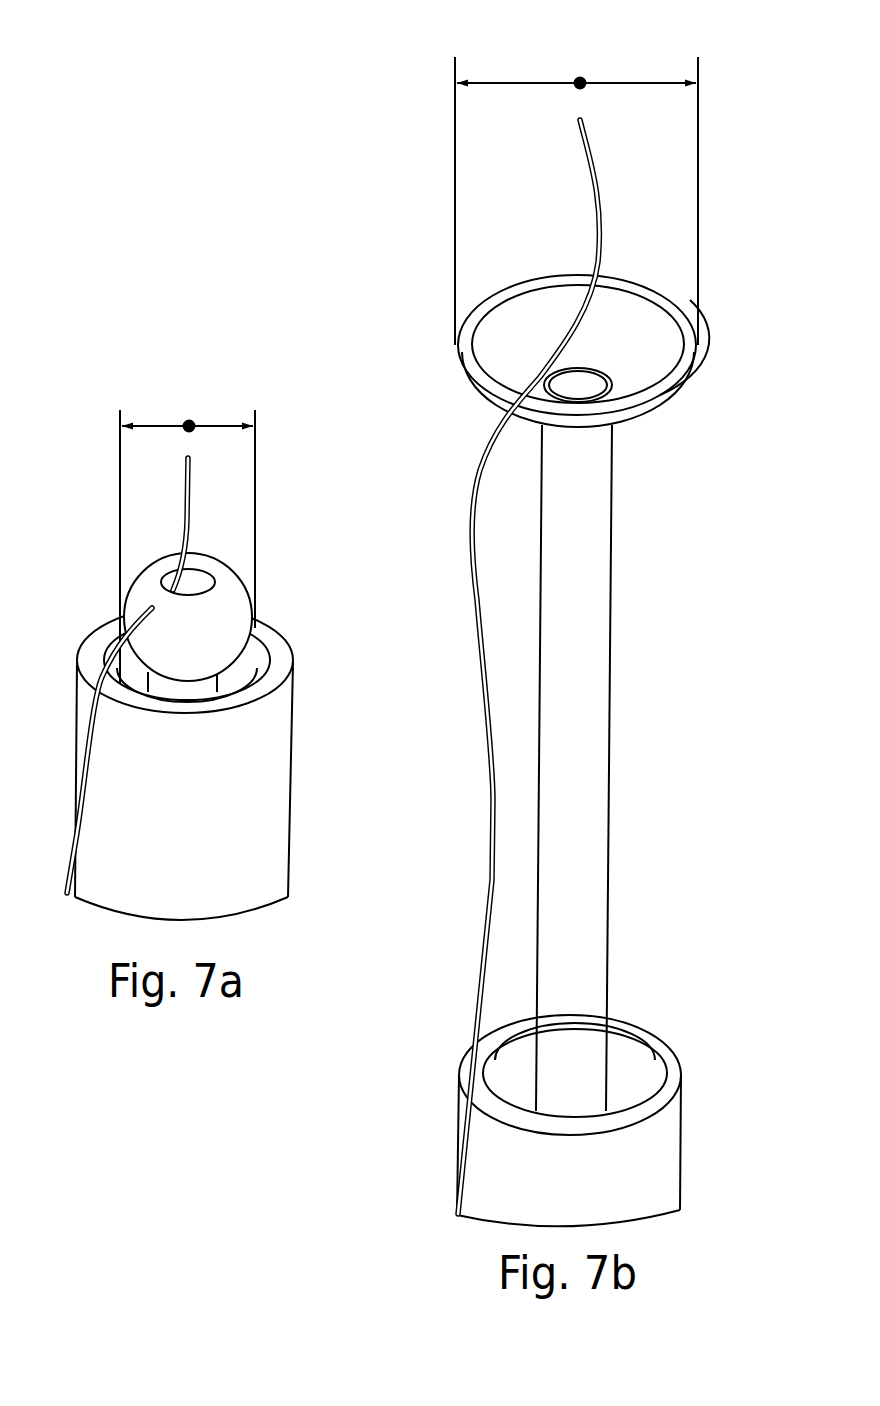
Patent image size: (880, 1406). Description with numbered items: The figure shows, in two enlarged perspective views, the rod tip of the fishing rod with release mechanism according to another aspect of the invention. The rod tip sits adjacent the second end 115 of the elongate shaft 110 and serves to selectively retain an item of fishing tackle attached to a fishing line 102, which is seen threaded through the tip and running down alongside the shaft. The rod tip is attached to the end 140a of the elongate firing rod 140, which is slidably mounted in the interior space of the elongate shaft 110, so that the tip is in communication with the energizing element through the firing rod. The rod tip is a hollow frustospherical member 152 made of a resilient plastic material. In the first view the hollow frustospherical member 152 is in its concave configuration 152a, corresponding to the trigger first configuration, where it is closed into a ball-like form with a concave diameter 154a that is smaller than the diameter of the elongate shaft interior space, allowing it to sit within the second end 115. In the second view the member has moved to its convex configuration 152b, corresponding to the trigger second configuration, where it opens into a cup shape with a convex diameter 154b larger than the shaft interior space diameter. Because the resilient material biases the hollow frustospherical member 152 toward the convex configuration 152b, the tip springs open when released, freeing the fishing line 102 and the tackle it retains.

In FIG. 7B, the fishing line 102 is at (490, 876).
In FIG. 7A, the elongate shaft 110 is at (300, 746).
In FIG. 7B, the elongate shaft 110 is at (694, 1147).
In FIG. 7A, the second end 115 is at (290, 632).
In FIG. 7B, the second end 115 is at (649, 1023).
In FIG. 7B, the elongate firing rod 140 is at (607, 848).
In FIG. 7B, the end of the firing rod 140a is at (612, 427).
In FIG. 7A, the hollow frustospherical member 152 is at (192, 586).
In FIG. 7B, the hollow frustospherical member 152 is at (567, 379).
In FIG. 7A, the concave configuration 152a is at (235, 558).
In FIG. 7B, the convex configuration 152b is at (689, 385).
In FIG. 7A, the concave diameter 154a is at (189, 426).
In FIG. 7B, the convex diameter 154b is at (580, 83).